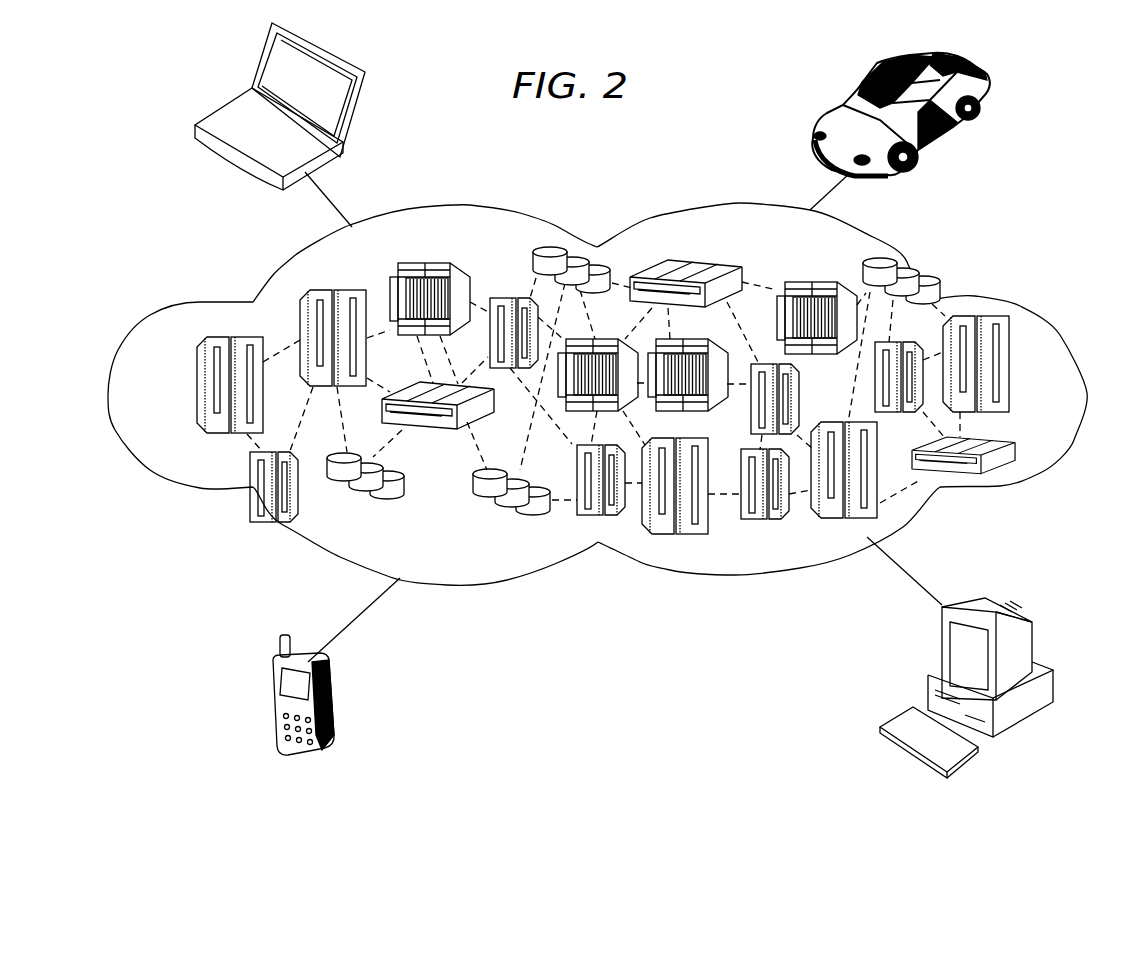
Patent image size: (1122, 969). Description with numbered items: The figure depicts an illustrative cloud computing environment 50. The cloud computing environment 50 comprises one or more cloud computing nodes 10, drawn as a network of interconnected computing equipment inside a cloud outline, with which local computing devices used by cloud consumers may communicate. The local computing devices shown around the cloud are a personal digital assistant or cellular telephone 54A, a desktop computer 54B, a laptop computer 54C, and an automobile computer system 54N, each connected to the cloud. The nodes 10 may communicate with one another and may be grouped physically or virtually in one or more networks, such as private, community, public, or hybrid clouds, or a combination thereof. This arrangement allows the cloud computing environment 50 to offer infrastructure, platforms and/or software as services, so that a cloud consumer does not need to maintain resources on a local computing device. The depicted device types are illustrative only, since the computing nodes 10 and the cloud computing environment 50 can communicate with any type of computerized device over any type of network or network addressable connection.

The cloud computing environment 50 is at (1038, 312).
The cloud computing node 10 is at (995, 471).
The personal digital assistant or cellular telephone 54A is at (330, 668).
The desktop computer 54B is at (932, 668).
The laptop computer 54C is at (236, 100).
The automobile computer system 54N is at (832, 103).